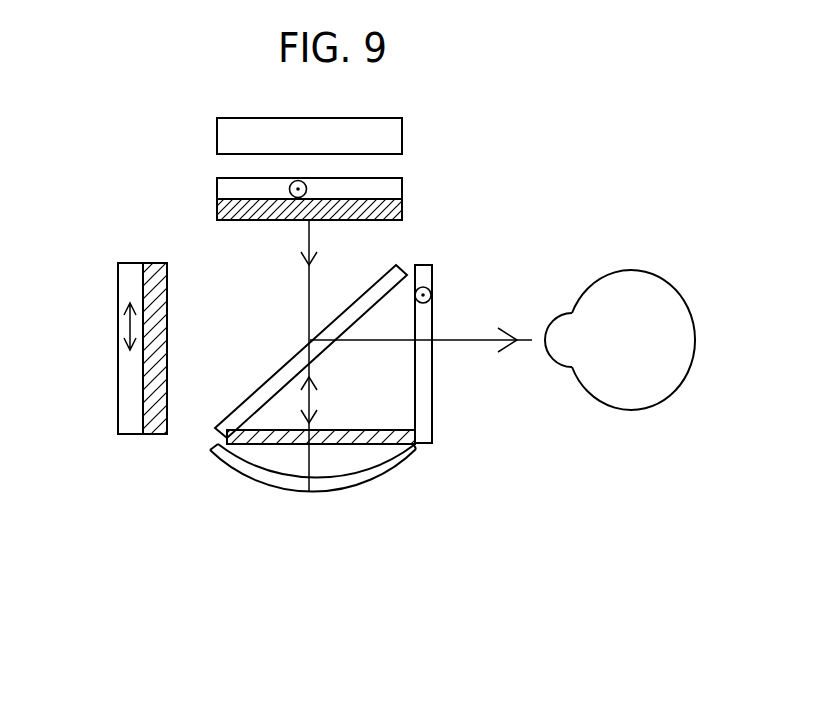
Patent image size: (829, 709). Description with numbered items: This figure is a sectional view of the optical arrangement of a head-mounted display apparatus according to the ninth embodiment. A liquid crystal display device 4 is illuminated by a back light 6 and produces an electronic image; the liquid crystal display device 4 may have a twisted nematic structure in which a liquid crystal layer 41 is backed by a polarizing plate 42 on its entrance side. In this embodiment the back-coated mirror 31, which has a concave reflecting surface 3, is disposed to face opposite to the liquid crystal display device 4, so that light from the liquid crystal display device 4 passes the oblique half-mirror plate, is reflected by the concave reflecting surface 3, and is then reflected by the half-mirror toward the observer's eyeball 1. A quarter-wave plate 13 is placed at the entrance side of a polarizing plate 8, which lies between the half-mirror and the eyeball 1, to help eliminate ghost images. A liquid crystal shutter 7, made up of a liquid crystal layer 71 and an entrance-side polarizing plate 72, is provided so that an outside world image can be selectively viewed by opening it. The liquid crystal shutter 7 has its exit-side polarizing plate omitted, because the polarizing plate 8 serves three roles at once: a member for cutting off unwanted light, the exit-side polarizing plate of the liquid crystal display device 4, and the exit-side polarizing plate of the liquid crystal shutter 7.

The eyeball 1 is at (653, 414).
The concave reflecting surface 3 is at (313, 500).
The back-coated mirror 31 is at (348, 481).
The quarter-wave plate 13 is at (370, 440).
The liquid crystal display device 4 is at (366, 199).
The liquid crystal layer 41 is at (400, 210).
The polarizing plate 42 is at (400, 188).
The back light 6 is at (400, 131).
The liquid crystal shutter 7 is at (131, 421).
The liquid crystal layer 71 is at (160, 435).
The polarizing plate 72 is at (130, 435).
The polarizing plate 8 is at (430, 446).